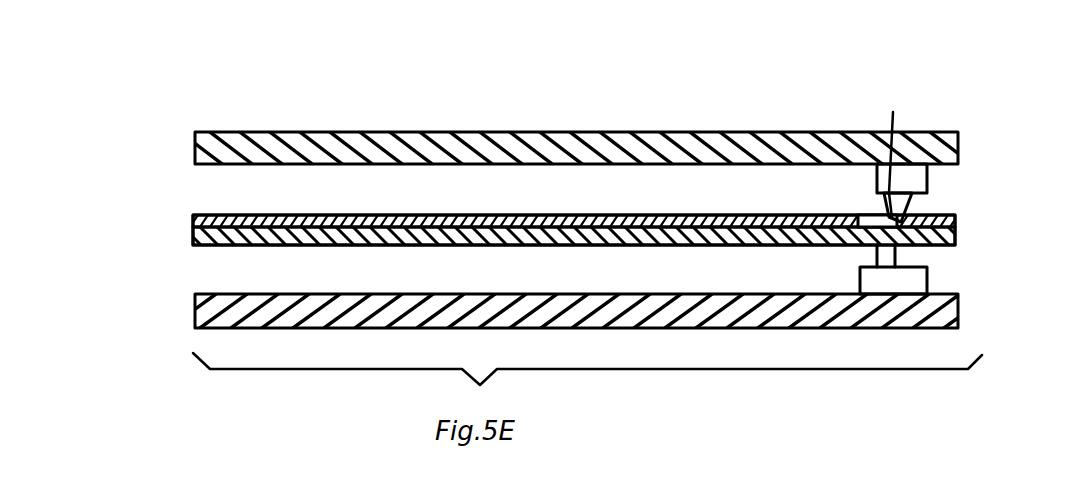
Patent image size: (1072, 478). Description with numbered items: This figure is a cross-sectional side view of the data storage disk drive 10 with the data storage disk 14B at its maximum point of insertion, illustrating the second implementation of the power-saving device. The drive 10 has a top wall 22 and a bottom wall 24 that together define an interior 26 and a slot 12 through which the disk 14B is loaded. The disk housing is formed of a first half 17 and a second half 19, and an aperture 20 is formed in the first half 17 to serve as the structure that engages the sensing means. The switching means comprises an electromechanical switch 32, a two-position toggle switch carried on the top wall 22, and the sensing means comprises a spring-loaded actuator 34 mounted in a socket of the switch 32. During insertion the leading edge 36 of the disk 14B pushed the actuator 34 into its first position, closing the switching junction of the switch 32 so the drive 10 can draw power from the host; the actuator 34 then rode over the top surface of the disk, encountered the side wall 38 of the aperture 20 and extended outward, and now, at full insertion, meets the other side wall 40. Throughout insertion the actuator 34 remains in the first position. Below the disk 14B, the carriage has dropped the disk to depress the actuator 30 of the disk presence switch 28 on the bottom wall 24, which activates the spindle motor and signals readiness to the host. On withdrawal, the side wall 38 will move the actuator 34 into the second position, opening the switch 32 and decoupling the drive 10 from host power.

The disk drive 10 is at (186, 104).
The slot 12 is at (942, 257).
The data storage disk 14B is at (276, 246).
The first half of the disk housing 17 is at (357, 215).
The second half of the disk housing 19 is at (955, 237).
The aperture 20 is at (868, 244).
The top wall 22 is at (778, 132).
The bottom wall 24 is at (195, 305).
The interior 26 is at (217, 195).
The disk presence switch 28 is at (860, 279).
The actuator of disk presence switch 30 is at (902, 253).
The electromechanical switch 32 is at (920, 178).
The actuator 34 is at (912, 199).
The leading edge 36 is at (195, 234).
The side wall 38 is at (860, 217).
The side wall 40 is at (897, 150).